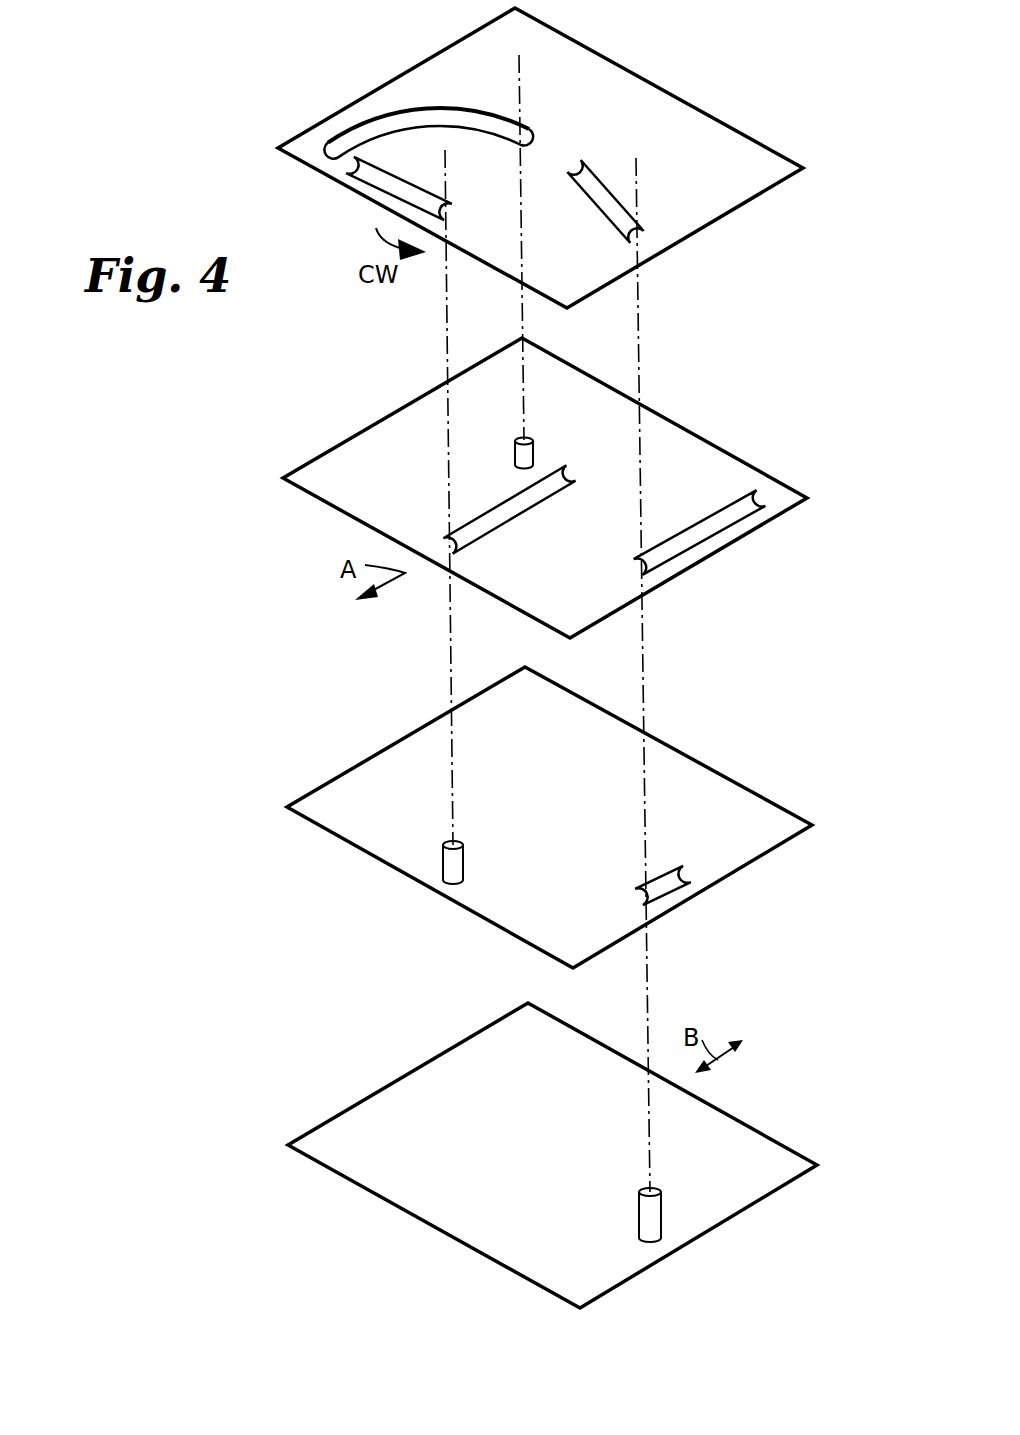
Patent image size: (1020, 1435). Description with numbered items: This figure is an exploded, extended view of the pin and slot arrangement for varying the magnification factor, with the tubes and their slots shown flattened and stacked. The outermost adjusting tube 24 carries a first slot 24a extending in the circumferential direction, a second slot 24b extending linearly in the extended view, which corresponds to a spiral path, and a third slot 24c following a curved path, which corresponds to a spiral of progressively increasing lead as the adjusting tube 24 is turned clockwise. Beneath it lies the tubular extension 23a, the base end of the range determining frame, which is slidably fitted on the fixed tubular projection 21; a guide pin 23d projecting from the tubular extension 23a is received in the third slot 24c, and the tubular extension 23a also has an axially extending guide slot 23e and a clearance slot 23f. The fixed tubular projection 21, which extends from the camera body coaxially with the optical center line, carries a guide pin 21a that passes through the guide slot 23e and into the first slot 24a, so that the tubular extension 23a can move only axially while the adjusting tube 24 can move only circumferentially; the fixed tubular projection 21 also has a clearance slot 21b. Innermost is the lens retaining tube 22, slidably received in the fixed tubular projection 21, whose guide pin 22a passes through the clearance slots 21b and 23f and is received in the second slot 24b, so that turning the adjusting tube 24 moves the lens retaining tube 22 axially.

The adjusting tube 24 is at (352, 106).
The first slot 24a is at (374, 184).
The second slot 24b is at (606, 190).
The third slot 24c is at (412, 112).
The tubular extension 23a is at (333, 446).
The guide pin 23d is at (528, 440).
The guide slot 23e is at (521, 512).
The clearance slot 23f is at (708, 540).
The fixed tubular projection 21 is at (352, 770).
The guide pin 21a is at (446, 843).
The clearance slot 21b is at (678, 890).
The lens retaining tube 22 is at (362, 1101).
The guide pin 22a is at (662, 1207).